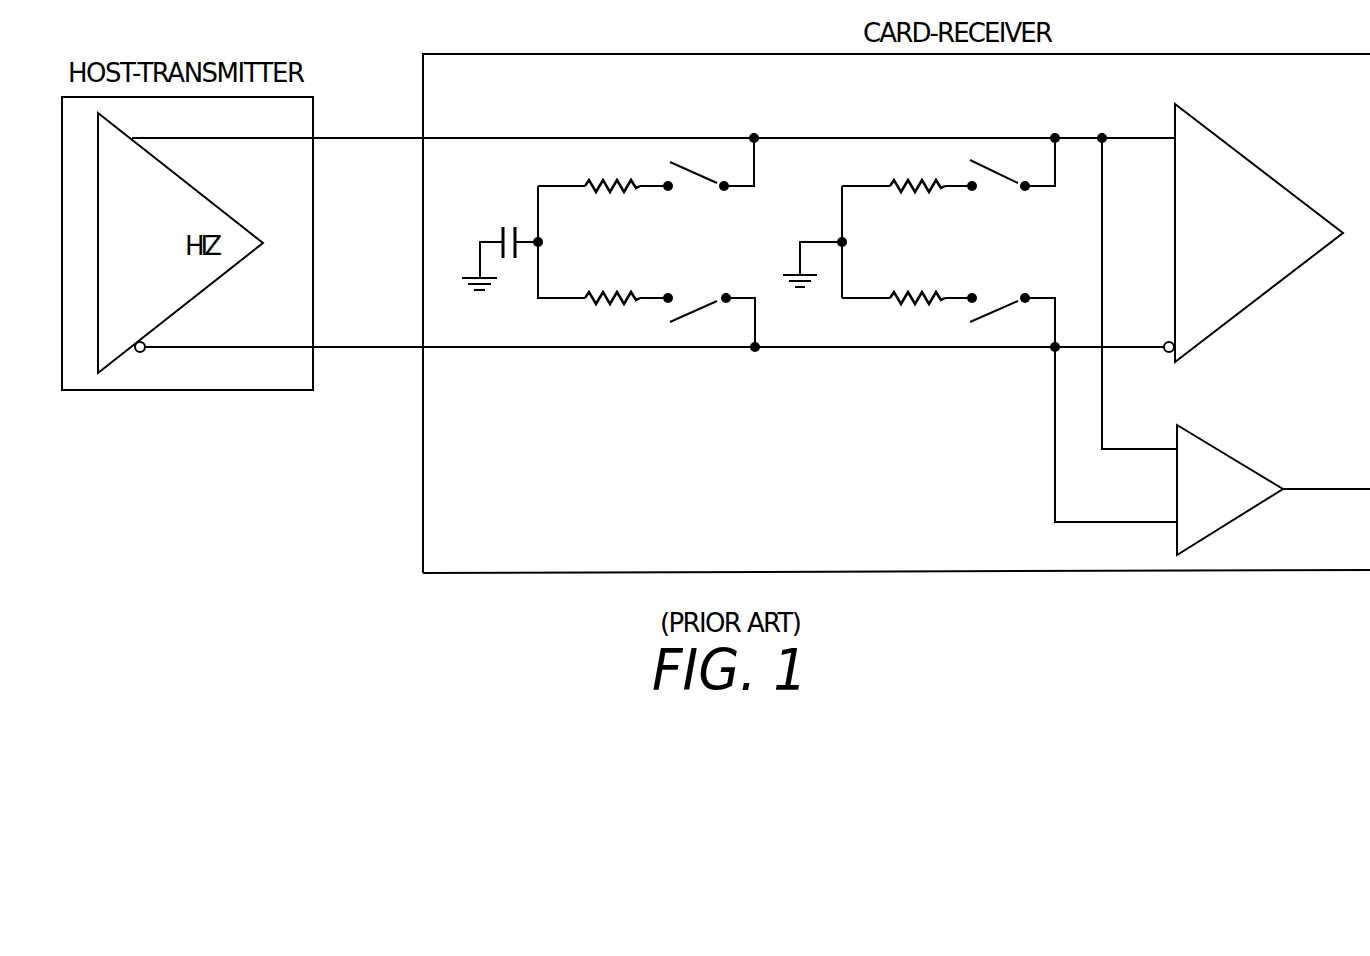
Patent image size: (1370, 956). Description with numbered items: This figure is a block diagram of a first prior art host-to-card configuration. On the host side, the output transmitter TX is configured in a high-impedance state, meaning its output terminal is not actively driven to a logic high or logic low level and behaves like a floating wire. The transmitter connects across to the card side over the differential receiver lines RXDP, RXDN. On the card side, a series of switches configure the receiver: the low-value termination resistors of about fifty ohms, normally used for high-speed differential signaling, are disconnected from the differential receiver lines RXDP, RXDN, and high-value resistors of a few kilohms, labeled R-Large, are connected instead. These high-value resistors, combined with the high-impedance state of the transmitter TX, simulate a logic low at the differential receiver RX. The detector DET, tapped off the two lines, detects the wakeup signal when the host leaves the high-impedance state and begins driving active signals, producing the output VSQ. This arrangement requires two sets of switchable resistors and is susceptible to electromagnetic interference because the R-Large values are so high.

The output transmitter TX is at (180, 243).
The differential receiver line RXDP is at (653, 202).
The differential receiver line RXDN is at (654, 338).
The differential receiver RX is at (1259, 233).
The detector DET is at (1169, 346).
The squelch detect output VSQ is at (1326, 476).